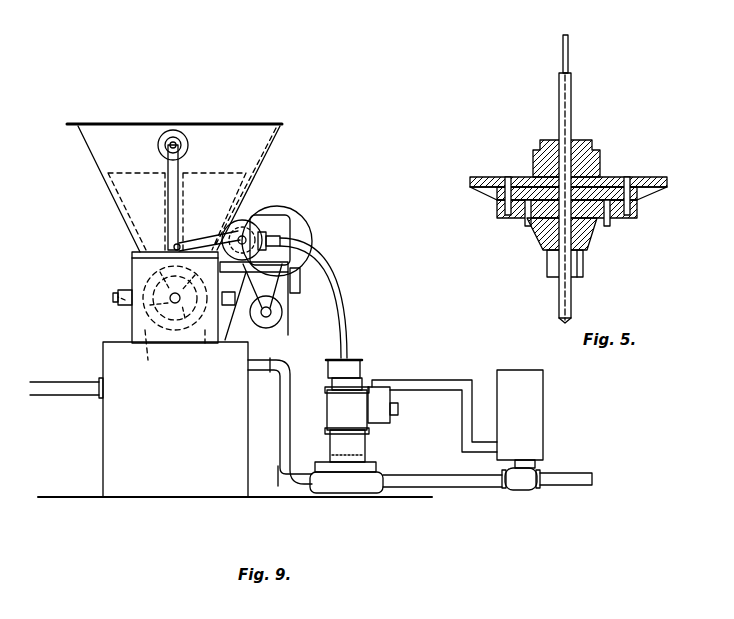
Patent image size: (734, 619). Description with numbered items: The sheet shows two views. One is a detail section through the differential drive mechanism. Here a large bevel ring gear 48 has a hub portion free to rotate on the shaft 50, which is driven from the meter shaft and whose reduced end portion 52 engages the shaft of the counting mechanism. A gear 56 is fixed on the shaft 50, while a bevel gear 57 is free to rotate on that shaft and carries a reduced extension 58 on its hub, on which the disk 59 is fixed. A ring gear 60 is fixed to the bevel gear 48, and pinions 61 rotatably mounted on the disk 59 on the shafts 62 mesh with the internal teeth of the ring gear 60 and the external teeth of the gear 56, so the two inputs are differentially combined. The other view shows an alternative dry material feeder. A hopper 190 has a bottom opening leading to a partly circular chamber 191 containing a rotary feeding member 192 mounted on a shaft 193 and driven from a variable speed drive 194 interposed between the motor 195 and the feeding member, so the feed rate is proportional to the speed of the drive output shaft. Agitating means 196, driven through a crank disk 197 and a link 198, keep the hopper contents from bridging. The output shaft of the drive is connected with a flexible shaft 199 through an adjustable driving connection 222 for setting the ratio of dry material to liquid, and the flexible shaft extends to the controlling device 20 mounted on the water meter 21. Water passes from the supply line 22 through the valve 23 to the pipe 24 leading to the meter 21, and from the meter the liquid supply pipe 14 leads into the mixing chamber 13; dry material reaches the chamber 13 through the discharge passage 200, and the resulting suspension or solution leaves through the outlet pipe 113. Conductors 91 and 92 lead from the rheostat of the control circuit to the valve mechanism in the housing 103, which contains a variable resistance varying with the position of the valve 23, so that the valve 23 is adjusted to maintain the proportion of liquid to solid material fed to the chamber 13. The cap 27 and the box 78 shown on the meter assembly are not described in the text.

In FIG. 9, the mixing chamber 13 is at (128, 402).
In FIG. 9, the liquid supply pipe 14 is at (281, 405).
In FIG. 9, the controlling device 20 is at (350, 403).
In FIG. 9, the water meter 21 is at (358, 462).
In FIG. 9, the supply line 22 is at (557, 478).
In FIG. 9, the valve 23 is at (520, 483).
In FIG. 9, the pipe 24 is at (440, 487).
In FIG. 9, the cap 27 is at (352, 368).
In FIG. 9, the switch box 78 is at (380, 407).
In FIG. 9, the conductor 91 is at (431, 391).
In FIG. 9, the conductor 92 is at (438, 379).
In FIG. 9, the housing 103 is at (530, 408).
In FIG. 9, the outlet pipe 113 is at (66, 392).
In FIG. 9, the hopper 190 is at (248, 152).
In FIG. 9, the partly circular chamber 191 is at (125, 300).
In FIG. 9, the rotary feeding member 192 is at (165, 290).
In FIG. 9, the shaft 193 is at (117, 297).
In FIG. 9, the variable speed drive 194 is at (293, 210).
In FIG. 9, the motor 195 is at (268, 325).
In FIG. 9, the agitating means 196 is at (188, 137).
In FIG. 9, the crank disk 197 is at (250, 237).
In FIG. 9, the link 198 is at (200, 228).
In FIG. 9, the flexible shaft 199 is at (343, 285).
In FIG. 9, the discharge passage 200 is at (158, 343).
In FIG. 9, the adjustable driving connection 222 is at (264, 230).
In FIG. 5, the bevel ring gear 48 is at (500, 180).
In FIG. 5, the shaft 50 is at (572, 88).
In FIG. 5, the reduced end portion 52 is at (569, 58).
In FIG. 5, the gear 56 is at (540, 185).
In FIG. 5, the bevel gear 57 is at (547, 253).
In FIG. 5, the reduced extension 58 is at (583, 228).
In FIG. 5, the disk 59 is at (510, 215).
In FIG. 5, the ring gear 60 is at (498, 208).
In FIG. 5, the pinions 61 is at (508, 183).
In FIG. 5, the shafts 62 is at (528, 225).